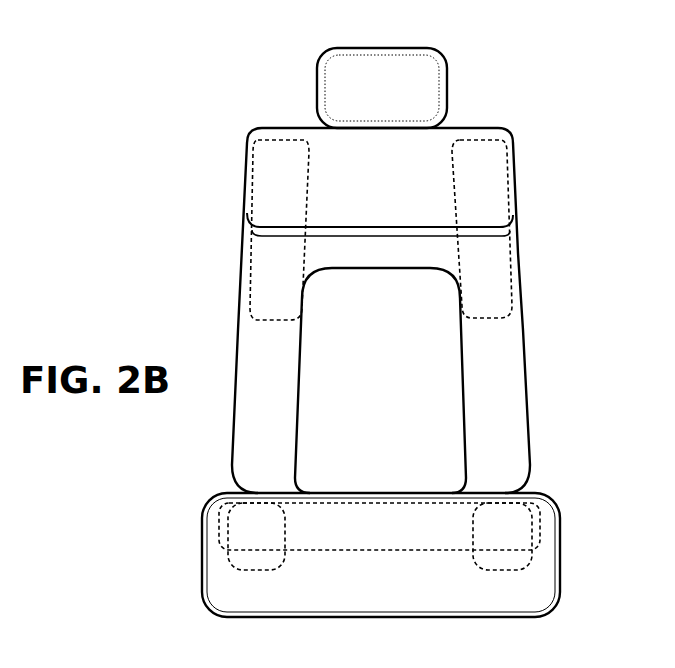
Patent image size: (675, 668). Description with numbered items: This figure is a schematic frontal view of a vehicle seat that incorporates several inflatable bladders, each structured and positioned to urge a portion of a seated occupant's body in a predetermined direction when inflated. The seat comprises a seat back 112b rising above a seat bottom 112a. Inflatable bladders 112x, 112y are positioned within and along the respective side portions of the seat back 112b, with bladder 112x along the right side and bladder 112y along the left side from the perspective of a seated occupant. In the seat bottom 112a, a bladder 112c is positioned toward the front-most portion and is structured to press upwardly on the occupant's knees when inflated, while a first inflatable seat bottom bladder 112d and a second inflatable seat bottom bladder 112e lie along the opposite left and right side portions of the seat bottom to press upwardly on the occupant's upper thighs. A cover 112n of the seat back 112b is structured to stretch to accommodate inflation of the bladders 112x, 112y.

The cover of the seat back 112n is at (365, 167).
The seat back 112b is at (517, 252).
The inflatable bladder 112x is at (283, 160).
The inflatable bladder 112y is at (477, 168).
The seat bottom 112a is at (560, 520).
The bladder 112c is at (414, 493).
The second inflatable seat bottom bladder 112e is at (240, 558).
The first inflatable seat bottom bladder 112d is at (523, 557).